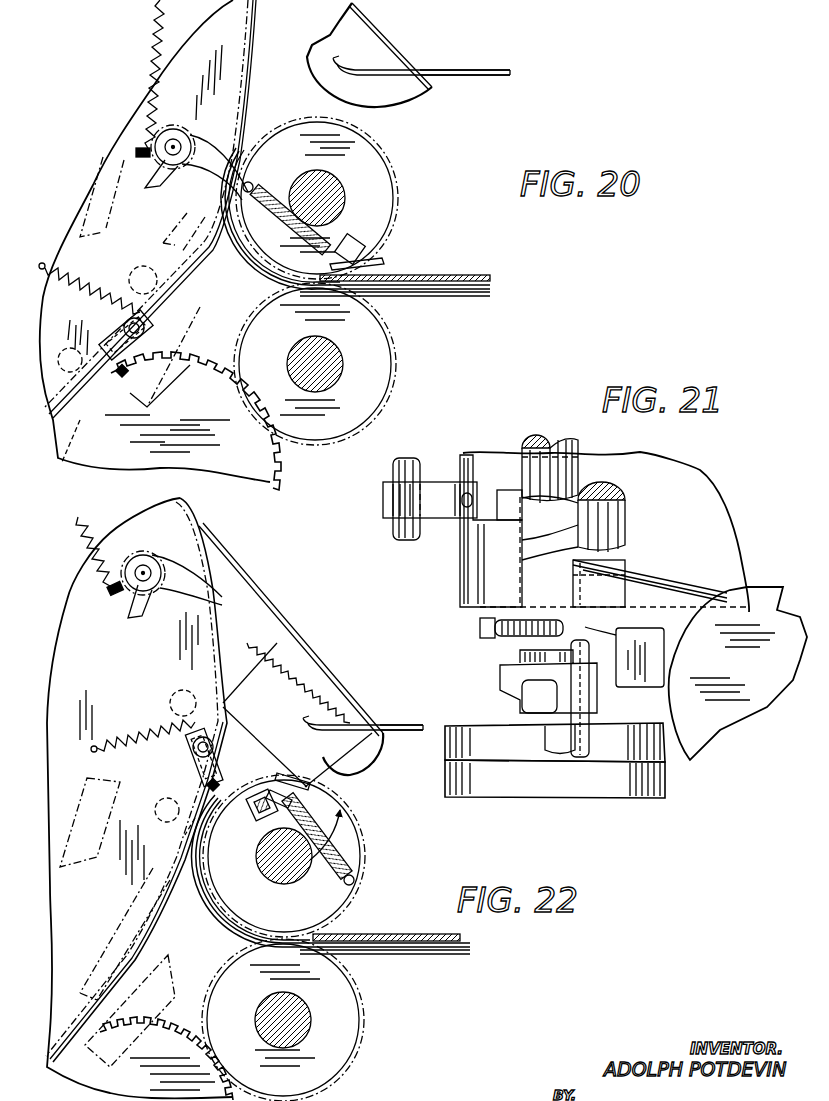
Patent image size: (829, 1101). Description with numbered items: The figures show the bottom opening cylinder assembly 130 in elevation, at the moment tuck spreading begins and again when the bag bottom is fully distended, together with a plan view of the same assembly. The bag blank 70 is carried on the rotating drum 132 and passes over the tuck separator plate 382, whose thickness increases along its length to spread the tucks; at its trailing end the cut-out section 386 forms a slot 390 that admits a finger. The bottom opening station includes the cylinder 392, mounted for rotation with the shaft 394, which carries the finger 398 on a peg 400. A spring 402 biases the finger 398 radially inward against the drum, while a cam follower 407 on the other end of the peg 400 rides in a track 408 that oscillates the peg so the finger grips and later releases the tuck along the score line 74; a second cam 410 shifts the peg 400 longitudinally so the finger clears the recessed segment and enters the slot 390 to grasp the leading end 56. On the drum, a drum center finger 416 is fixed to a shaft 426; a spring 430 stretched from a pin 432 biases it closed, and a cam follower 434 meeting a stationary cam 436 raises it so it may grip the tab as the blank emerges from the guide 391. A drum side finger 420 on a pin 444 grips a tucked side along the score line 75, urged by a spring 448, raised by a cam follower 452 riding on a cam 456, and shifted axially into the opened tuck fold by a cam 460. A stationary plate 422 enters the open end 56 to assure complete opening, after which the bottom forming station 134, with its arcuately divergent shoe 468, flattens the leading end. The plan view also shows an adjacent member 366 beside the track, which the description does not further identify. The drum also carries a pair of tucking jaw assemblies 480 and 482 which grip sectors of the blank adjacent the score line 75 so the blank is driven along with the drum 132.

In FIG. 22, the leading end 56 is at (255, 650).
In FIG. 22, the bag blank 70 is at (307, 678).
In FIG. 22, the score line 74 is at (290, 772).
In FIG. 22, the score line 75 is at (237, 720).
In FIG. 20, the bottom opening cylinder assembly 130 is at (286, 108).
In FIG. 22, the bottom opening cylinder assembly 130 is at (372, 873).
In FIG. 20, the drum 132 is at (258, 30).
In FIG. 22, the drum 132 is at (200, 522).
In FIG. 20, the bottom forming station 134 is at (389, 42).
In FIG. 22, the bottom forming station 134 is at (286, 617).
In FIG. 21, the cam 366 is at (718, 726).
In FIG. 20, the tuck separator plate 382 is at (468, 284).
In FIG. 21, the tuck separator plate 382 is at (676, 584).
In FIG. 22, the tuck separator plate 382 is at (441, 940).
In FIG. 21, the cut-out section 386 is at (616, 626).
In FIG. 21, the slot 390 is at (599, 583).
In FIG. 20, the guide 391 is at (411, 293).
In FIG. 21, the guide 391 is at (706, 460).
In FIG. 22, the guide 391 is at (406, 955).
In FIG. 20, the cylinder 392 is at (376, 150).
In FIG. 21, the cylinder 392 is at (620, 494).
In FIG. 22, the cylinder 392 is at (352, 908).
In FIG. 20, the shaft 394 is at (342, 200).
In FIG. 21, the shaft 394 is at (551, 436).
In FIG. 22, the shaft 394 is at (278, 880).
In FIG. 20, the finger 398 is at (355, 272).
In FIG. 21, the finger 398 is at (527, 605).
In FIG. 22, the finger 398 is at (292, 776).
In FIG. 20, the peg 400 is at (356, 243).
In FIG. 21, the peg 400 is at (590, 706).
In FIG. 22, the peg 400 is at (258, 818).
In FIG. 20, the spring 402 is at (272, 200).
In FIG. 21, the spring 402 is at (500, 640).
In FIG. 22, the spring 402 is at (332, 860).
In FIG. 21, the cam follower 407 is at (590, 728).
In FIG. 21, the track 408 is at (665, 766).
In FIG. 21, the second cam 410 is at (581, 784).
In FIG. 20, the drum center finger 416 is at (205, 175).
In FIG. 21, the drum center finger 416 is at (437, 484).
In FIG. 22, the drum center finger 416 is at (225, 597).
In FIG. 20, the drum side finger 420 is at (173, 322).
In FIG. 22, the drum side finger 420 is at (247, 753).
In FIG. 20, the stationary plate 422 is at (475, 79).
In FIG. 22, the stationary plate 422 is at (400, 720).
In FIG. 21, the shaft 426 is at (394, 525).
In FIG. 20, the spring 430 is at (156, 60).
In FIG. 22, the spring 430 is at (87, 545).
In FIG. 20, the pin 432 is at (137, 152).
In FIG. 22, the pin 432 is at (110, 593).
In FIG. 20, the cam follower 434 is at (149, 180).
In FIG. 22, the cam follower 434 is at (131, 618).
In FIG. 20, the stationary cam 436 is at (107, 163).
In FIG. 22, the stationary cam 436 is at (88, 875).
In FIG. 20, the pin 444 is at (125, 324).
In FIG. 22, the pin 444 is at (192, 748).
In FIG. 20, the spring 448 is at (96, 282).
In FIG. 22, the spring 448 is at (143, 730).
In FIG. 20, the cam follower 452 is at (88, 392).
In FIG. 22, the cam follower 452 is at (208, 782).
In FIG. 20, the cam 456 is at (160, 382).
In FIG. 22, the cam 456 is at (170, 955).
In FIG. 20, the cam 460 is at (183, 246).
In FIG. 22, the cam 460 is at (125, 930).
In FIG. 20, the shoe 468 is at (408, 68).
In FIG. 22, the shoe 468 is at (340, 689).
In FIG. 20, the leading tucking jaw assembly 480 is at (201, 298).
In FIG. 22, the leading tucking jaw assembly 480 is at (207, 698).
In FIG. 20, the tucking jaw assembly 482 is at (81, 441).
In FIG. 22, the tucking jaw assembly 482 is at (197, 836).